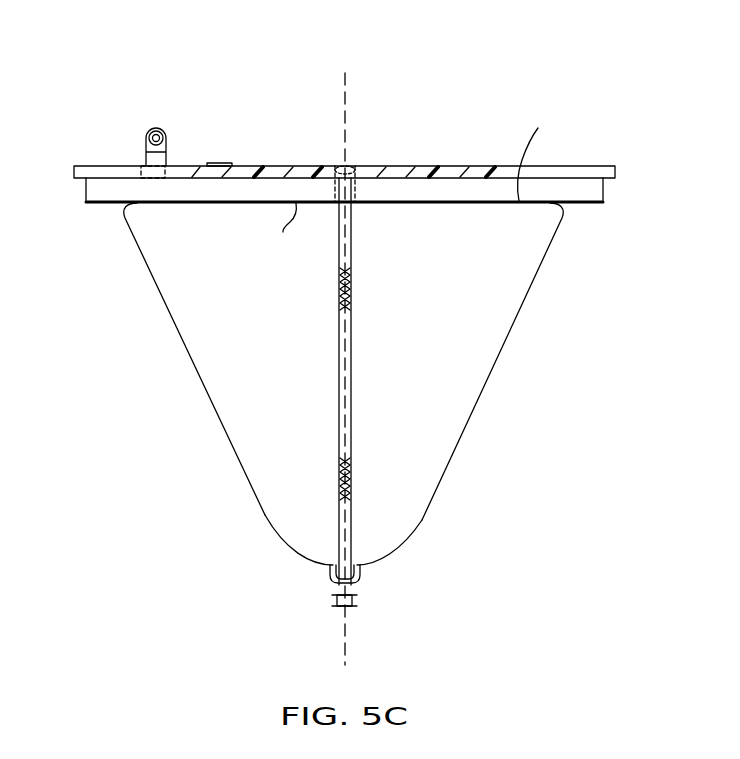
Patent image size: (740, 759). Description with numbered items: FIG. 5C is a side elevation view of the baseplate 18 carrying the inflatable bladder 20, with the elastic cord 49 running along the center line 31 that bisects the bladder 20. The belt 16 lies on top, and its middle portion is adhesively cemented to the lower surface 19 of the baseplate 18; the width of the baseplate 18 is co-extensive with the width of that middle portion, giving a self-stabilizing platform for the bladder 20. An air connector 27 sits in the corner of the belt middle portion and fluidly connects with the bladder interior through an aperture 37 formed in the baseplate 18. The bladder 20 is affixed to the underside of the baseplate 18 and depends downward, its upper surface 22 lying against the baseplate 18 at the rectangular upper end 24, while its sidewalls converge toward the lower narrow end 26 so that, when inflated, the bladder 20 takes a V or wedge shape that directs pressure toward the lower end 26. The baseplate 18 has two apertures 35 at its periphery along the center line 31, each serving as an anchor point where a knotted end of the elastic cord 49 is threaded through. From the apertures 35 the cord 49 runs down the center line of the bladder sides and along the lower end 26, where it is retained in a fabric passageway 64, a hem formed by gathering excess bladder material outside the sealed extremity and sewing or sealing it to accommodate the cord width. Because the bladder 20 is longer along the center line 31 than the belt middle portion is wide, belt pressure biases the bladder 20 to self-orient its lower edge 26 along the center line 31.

The belt 16 is at (549, 162).
The baseplate 18 is at (591, 206).
The lower surface of baseplate 19 is at (528, 152).
The bladder 20 is at (311, 408).
The upper surface of bladder 22 is at (283, 233).
The upper end of bladder 24 is at (128, 235).
The lower narrow end of bladder 26 is at (268, 523).
The air connector 27 is at (155, 128).
The center line 31 is at (345, 103).
The aperture 35 is at (355, 176).
The aperture 37 is at (150, 168).
The elastic cord 49 is at (354, 345).
The fabric passageway 64 is at (333, 579).